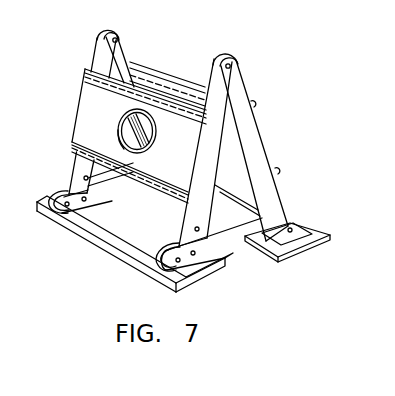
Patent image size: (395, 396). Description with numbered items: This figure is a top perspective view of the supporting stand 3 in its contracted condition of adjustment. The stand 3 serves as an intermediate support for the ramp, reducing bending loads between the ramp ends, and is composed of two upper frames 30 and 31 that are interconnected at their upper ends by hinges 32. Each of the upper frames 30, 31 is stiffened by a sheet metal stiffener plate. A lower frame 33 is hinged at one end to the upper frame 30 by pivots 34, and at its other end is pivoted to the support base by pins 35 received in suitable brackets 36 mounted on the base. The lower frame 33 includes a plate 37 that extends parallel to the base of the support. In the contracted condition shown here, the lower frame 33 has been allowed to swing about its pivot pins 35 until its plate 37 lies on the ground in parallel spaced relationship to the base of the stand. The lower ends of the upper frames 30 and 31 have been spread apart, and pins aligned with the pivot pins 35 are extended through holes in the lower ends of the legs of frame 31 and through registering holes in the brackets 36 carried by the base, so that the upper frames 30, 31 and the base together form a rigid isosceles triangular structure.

The supporting stand 3 is at (331, 233).
The upper frame 30 is at (85, 114).
The upper frame 31 is at (259, 142).
The hinges 32 is at (213, 60).
The lower frame 33 is at (232, 246).
The pivots 34 is at (83, 202).
The pins 35 is at (295, 223).
The brackets 36 is at (292, 237).
The plate 37 is at (108, 252).